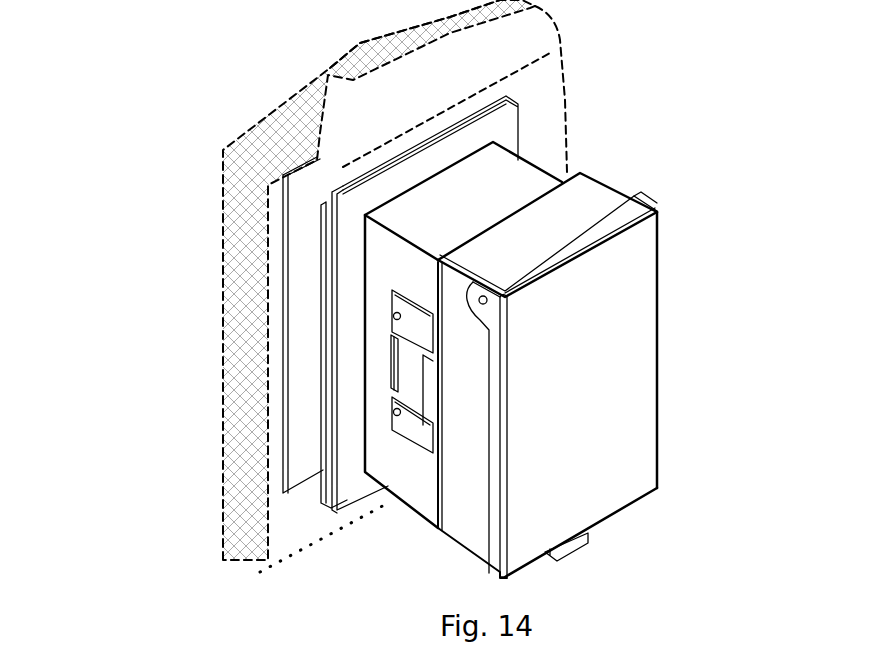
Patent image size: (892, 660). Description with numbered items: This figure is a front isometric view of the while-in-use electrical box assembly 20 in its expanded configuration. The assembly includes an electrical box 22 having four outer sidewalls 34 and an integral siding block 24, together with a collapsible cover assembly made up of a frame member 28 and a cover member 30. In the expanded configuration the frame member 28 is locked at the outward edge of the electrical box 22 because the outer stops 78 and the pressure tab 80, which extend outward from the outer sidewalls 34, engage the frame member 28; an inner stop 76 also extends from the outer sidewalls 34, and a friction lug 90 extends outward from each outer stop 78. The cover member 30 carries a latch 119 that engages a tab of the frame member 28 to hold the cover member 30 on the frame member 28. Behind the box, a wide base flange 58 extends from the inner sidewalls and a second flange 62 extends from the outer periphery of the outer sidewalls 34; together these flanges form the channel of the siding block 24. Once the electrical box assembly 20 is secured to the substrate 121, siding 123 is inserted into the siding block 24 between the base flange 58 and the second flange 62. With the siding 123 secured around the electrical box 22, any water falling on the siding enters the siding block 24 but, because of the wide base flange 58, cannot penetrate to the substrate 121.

The electrical box assembly 20 is at (158, 162).
The substrate 121 is at (270, 190).
The siding 123 is at (434, 96).
The second flange 62 is at (513, 102).
The electrical box 22 is at (532, 163).
The frame member 28 is at (612, 187).
The cover member 30 is at (598, 311).
The pressure tab 80 is at (430, 380).
The outer sidewalls 34 is at (418, 276).
The friction lug 90 is at (395, 318).
The inner stop 76 is at (390, 360).
The outer stops 78 is at (405, 425).
The base flange 58 is at (300, 228).
The siding block 24 is at (318, 490).
The latch 119 is at (572, 552).